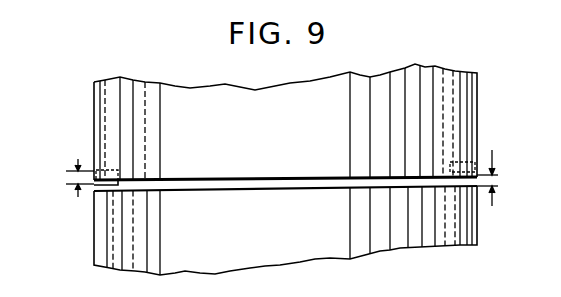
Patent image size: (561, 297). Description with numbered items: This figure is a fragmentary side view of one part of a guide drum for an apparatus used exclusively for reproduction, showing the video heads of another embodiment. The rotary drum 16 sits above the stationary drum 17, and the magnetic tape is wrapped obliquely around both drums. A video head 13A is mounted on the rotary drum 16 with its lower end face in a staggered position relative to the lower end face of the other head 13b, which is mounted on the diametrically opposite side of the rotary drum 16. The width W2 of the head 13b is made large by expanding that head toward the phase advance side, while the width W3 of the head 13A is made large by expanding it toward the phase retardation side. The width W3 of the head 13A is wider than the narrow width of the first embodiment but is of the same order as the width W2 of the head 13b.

The rotary drum 16 is at (100, 110).
The stationary drum 17 is at (417, 245).
The video head 13A is at (108, 170).
The video head 13b is at (460, 160).
The width of the head 13b W2 is at (506, 178).
The width of the head 13A W3 is at (65, 178).